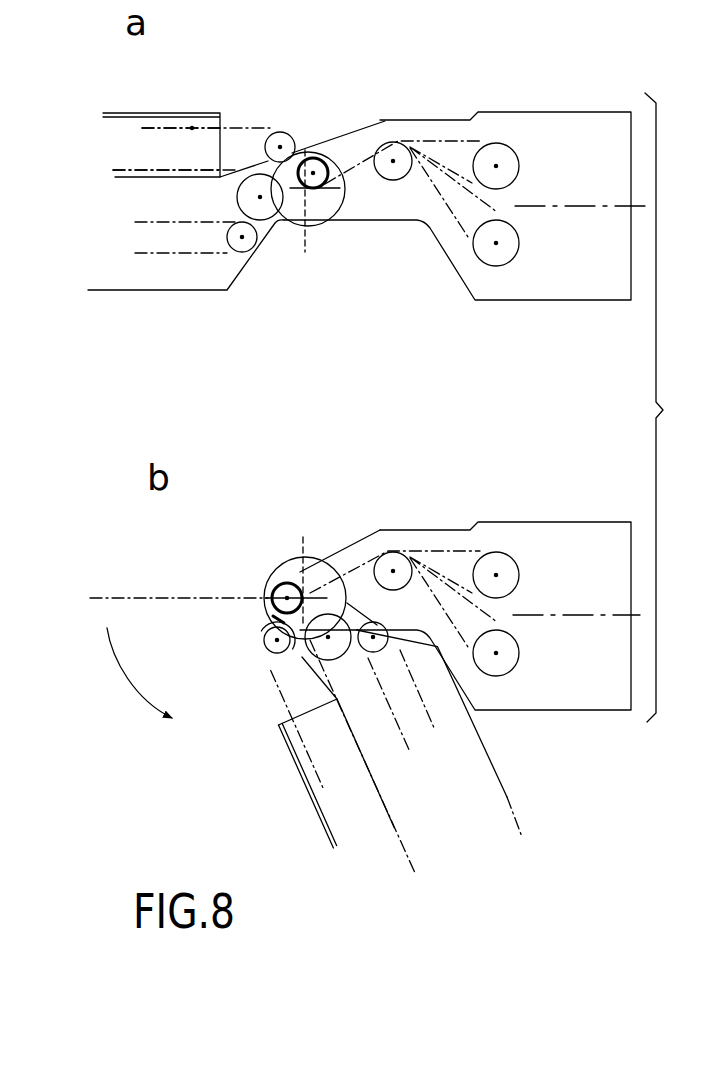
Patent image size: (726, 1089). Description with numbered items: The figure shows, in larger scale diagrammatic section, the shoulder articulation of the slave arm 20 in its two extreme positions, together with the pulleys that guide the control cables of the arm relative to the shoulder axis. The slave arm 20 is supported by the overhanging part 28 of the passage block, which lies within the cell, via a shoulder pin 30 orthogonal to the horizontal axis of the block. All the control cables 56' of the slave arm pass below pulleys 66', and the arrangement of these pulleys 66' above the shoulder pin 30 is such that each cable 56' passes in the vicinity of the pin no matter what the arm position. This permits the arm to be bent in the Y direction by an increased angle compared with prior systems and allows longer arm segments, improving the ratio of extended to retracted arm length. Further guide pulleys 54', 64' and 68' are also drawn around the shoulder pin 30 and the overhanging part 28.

In FIG. 8a, the slave arm 20 is at (146, 301).
In FIG. 8b, the slave arm 20 is at (512, 783).
In FIG. 8a, the overhanging part 28 is at (537, 300).
In FIG. 8b, the overhanging part 28 is at (533, 710).
In FIG. 8a, the shoulder pin 30 is at (321, 197).
In FIG. 8b, the shoulder pin 30 is at (318, 592).
In FIG. 8a, the guide rollers 54' is at (522, 170).
In FIG. 8a, the control cables 56' is at (183, 123).
In FIG. 8b, the control cables 56' is at (241, 640).
In FIG. 8a, the roller 64' is at (295, 119).
In FIG. 8a, the pulleys 66' is at (344, 132).
In FIG. 8b, the pulleys 66' is at (266, 574).
In FIG. 8a, the roller 68' is at (435, 161).